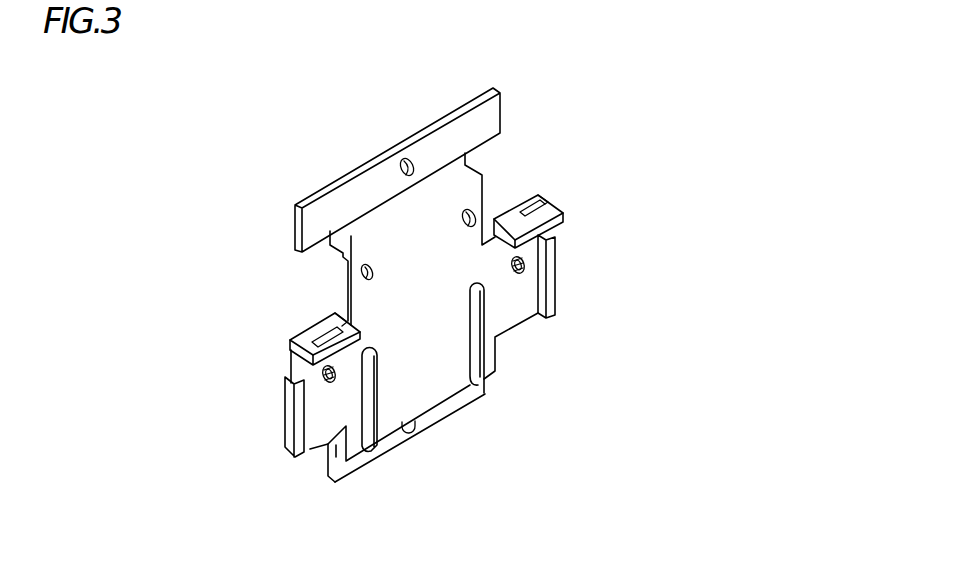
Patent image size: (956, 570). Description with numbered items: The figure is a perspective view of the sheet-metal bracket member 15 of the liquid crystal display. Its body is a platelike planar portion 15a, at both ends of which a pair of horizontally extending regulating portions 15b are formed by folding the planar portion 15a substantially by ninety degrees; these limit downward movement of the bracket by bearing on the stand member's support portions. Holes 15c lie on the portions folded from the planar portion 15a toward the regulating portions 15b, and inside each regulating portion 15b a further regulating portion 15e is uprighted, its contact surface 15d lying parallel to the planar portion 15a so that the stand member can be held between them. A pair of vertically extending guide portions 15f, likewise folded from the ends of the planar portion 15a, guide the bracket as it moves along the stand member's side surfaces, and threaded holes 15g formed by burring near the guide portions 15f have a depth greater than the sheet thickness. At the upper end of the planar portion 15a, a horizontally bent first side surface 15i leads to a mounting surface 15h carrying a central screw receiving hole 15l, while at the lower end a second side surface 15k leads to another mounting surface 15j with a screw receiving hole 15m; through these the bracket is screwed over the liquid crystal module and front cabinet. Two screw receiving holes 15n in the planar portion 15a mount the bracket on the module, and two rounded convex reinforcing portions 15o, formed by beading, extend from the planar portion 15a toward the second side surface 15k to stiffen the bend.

The bracket member 15 is at (205, 110).
The planar portion 15a is at (428, 272).
The regulating portions 15b is at (293, 335).
The holes 15c is at (330, 322).
The contact surfaces 15d is at (310, 335).
The regulating portions 15e is at (320, 327).
The guide portions 15f is at (294, 423).
The threaded holes 15g is at (323, 373).
The mounting surface 15h is at (430, 152).
The first side surface 15i is at (445, 187).
The mounting surface 15j is at (485, 396).
The second side surface 15k is at (328, 444).
The screw receiving hole 15l is at (430, 247).
The screw receiving hole 15m is at (414, 431).
The screw receiving holes 15n is at (525, 210).
The reinforcing portions 15o is at (473, 323).